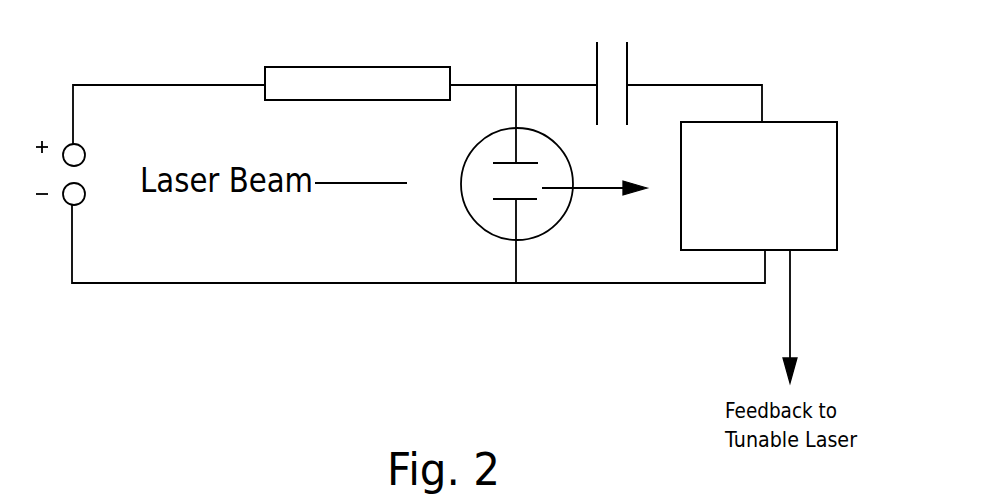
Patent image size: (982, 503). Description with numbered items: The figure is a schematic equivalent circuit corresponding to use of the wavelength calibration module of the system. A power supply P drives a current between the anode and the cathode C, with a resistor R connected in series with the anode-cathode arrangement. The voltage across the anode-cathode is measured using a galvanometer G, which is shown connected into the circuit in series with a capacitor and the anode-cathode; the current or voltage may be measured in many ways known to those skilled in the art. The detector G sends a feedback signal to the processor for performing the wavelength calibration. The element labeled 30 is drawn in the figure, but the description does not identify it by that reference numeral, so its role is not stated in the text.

The phototube / photodetector 30 is at (466, 239).
The power supply P is at (73, 173).
The resistor R is at (357, 66).
The cathode C is at (612, 65).
The galvanometer G is at (837, 170).